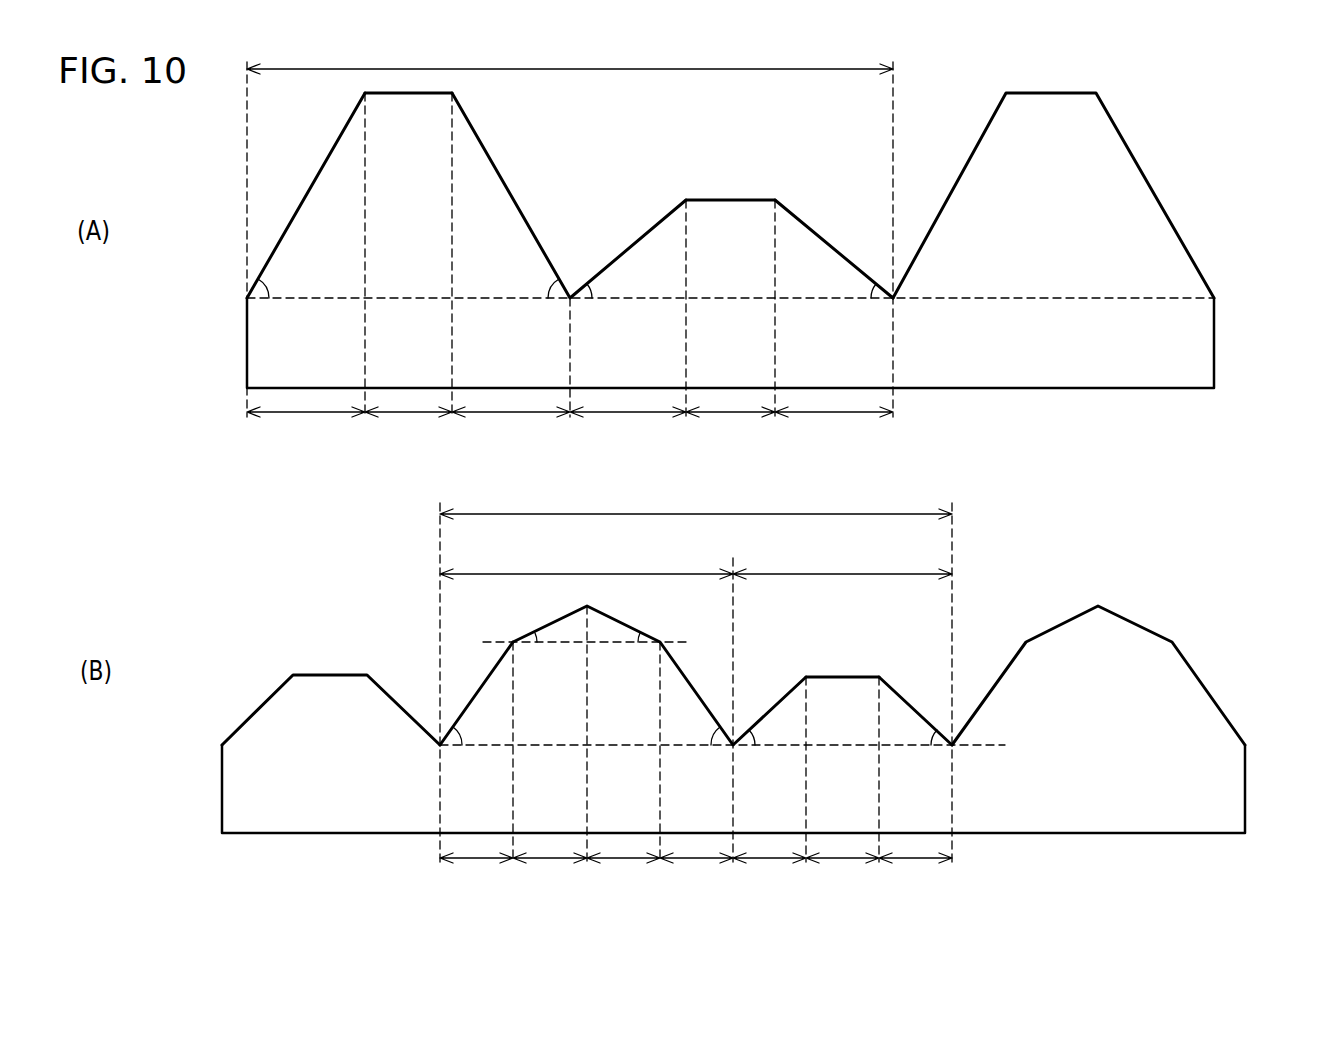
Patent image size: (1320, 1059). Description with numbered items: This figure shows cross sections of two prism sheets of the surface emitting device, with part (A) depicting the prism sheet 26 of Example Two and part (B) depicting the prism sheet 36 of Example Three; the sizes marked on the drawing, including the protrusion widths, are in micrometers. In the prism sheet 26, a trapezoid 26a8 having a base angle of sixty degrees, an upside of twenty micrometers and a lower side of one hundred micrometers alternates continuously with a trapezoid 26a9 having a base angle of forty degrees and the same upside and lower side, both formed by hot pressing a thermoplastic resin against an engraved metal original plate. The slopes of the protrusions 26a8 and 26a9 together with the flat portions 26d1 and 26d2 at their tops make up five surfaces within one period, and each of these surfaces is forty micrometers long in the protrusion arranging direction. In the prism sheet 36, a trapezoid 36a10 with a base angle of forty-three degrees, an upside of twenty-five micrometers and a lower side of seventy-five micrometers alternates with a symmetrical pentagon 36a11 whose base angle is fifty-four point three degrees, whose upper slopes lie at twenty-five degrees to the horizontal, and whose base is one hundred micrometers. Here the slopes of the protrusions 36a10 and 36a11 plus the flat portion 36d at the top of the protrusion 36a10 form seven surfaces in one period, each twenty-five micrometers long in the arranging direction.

The prism sheet 26 is at (756, 235).
The trapezoid protrusion 26a8 is at (312, 152).
The trapezoid protrusion 26a9 is at (858, 186).
The flat portion 26d1 is at (405, 93).
The flat portion 26d2 is at (730, 200).
The prism sheet 36 is at (760, 685).
The trapezoid protrusion 36a10 is at (925, 696).
The symmetrical pentagon protrusion 36a11 is at (448, 698).
The flat portion 36d is at (843, 677).